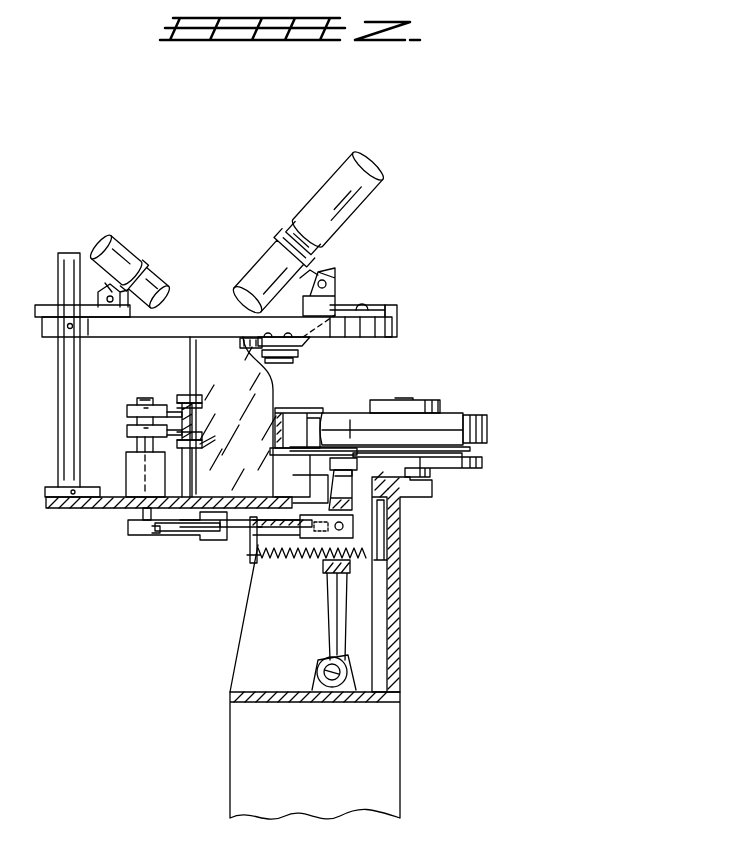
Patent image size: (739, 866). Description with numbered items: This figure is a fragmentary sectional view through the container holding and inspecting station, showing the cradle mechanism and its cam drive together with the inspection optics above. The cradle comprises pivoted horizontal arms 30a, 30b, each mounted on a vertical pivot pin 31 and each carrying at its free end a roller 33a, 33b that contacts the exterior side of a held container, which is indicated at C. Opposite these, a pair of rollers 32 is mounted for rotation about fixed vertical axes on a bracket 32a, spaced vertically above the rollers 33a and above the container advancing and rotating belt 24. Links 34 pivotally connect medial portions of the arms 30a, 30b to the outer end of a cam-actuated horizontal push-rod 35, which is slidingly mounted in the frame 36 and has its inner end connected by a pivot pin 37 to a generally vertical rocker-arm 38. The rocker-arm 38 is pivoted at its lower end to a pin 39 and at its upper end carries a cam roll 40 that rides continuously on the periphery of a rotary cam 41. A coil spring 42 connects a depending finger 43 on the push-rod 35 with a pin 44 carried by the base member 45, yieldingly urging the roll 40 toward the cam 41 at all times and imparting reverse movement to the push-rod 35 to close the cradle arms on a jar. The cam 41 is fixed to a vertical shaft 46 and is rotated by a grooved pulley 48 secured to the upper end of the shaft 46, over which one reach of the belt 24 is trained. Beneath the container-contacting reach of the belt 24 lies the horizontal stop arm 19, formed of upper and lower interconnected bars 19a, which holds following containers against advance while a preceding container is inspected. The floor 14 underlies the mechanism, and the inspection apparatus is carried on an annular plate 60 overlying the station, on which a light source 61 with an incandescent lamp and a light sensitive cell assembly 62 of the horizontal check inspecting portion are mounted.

The floor 14 is at (115, 495).
The stop arm 19 is at (280, 408).
The upper and lower interconnected bars 19a is at (283, 413).
The belt 24 is at (300, 430).
The pivoted horizontal arm 30a is at (165, 410).
The pivoted horizontal arm 30b is at (126, 448).
The vertical pivot pin 31 is at (142, 404).
The roller 32 is at (245, 333).
The bracket 32a is at (300, 346).
The roller 33a is at (186, 395).
The roller 33b is at (205, 440).
The link 34 is at (170, 540).
The push-rod 35 is at (245, 530).
The frame 36 is at (330, 508).
The pivot pin 37 is at (343, 525).
The rocker-arm 38 is at (338, 630).
The pin 39 is at (345, 672).
The cam roll 40 is at (352, 463).
The rotary cam 41 is at (484, 462).
The coil spring 42 is at (272, 552).
The depending finger 43 is at (252, 548).
The pin 44 is at (386, 542).
The base member 45 is at (395, 595).
The vertical shaft 46 is at (420, 400).
The grooved pulley 48 is at (470, 412).
The annular plate 60 is at (396, 327).
The light source 61 is at (152, 245).
The light sensitive cell assembly 62 is at (365, 178).
The glass panel C is at (205, 355).